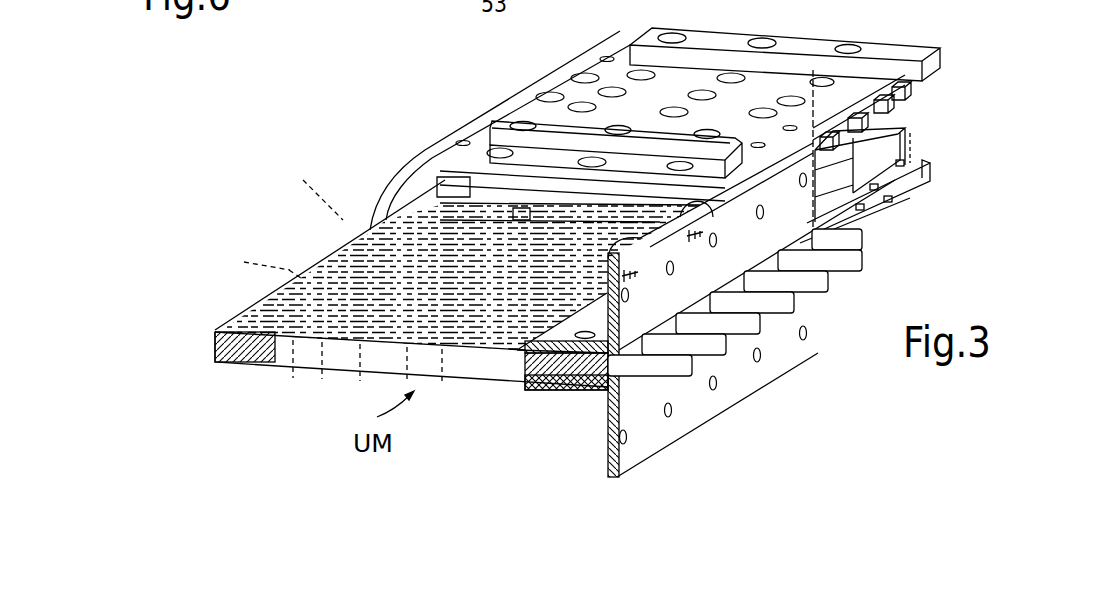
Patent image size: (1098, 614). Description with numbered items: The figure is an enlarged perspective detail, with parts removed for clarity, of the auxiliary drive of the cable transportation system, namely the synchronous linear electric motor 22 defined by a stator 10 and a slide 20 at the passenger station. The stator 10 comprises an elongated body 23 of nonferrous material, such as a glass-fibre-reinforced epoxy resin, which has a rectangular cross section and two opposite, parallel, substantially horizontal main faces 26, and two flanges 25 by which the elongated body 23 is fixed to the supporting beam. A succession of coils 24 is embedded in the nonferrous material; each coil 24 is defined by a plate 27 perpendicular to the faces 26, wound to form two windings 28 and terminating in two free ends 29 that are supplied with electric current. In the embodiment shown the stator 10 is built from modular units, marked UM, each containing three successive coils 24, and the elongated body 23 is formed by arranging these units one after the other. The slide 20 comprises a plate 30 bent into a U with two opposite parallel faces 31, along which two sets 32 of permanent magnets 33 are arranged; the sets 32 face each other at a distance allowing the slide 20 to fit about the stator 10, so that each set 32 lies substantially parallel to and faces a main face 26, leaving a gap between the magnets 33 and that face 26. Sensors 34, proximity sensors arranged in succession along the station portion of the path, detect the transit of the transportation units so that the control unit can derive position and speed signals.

The stator 10 is at (374, 386).
The slide 20 is at (950, 53).
The synchronous linear electric motor 22 is at (231, 409).
The elongated body 23 is at (261, 363).
The coil 24 is at (188, 298).
The flange 25 is at (632, 452).
The main face 26 is at (437, 283).
The plate 27 is at (486, 368).
The winding 28 is at (373, 223).
The free end 29 is at (682, 376).
The plate 30 is at (913, 56).
The face 31 is at (930, 78).
The set of permanent magnets 32 is at (913, 100).
The permanent magnet 33 is at (813, 137).
The sensor 34 is at (643, 240).